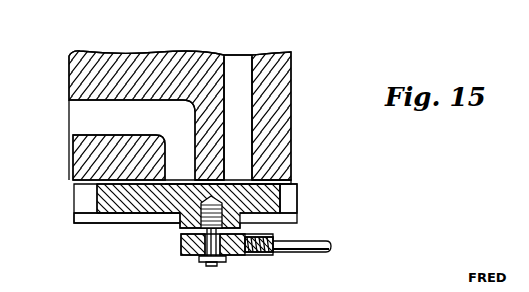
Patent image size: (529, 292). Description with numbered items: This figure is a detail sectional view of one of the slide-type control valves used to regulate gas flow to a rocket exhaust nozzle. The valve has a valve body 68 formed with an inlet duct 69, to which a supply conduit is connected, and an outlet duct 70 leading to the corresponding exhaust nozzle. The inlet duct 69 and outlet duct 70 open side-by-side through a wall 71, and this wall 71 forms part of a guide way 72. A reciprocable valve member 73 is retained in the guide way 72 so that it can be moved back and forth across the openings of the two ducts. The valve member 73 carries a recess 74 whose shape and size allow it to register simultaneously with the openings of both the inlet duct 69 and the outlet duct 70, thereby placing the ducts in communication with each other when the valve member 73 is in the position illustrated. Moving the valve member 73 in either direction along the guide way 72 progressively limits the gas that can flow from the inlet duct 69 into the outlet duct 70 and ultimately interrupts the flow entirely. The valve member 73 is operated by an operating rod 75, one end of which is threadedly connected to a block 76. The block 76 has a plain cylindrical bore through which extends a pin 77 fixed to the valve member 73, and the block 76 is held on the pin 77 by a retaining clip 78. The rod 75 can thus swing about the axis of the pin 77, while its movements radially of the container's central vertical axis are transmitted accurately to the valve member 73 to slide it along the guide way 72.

The valve body 68 is at (150, 56).
The inlet duct 69 is at (245, 57).
The outlet duct 70 is at (82, 124).
The wall 71 is at (76, 193).
The guide way 72 is at (84, 202).
The valve member 73 is at (297, 201).
The recess 74 is at (180, 182).
The operating rod 75 is at (302, 243).
The block 76 is at (262, 255).
The pin 77 is at (214, 263).
The retaining clip 78 is at (200, 258).